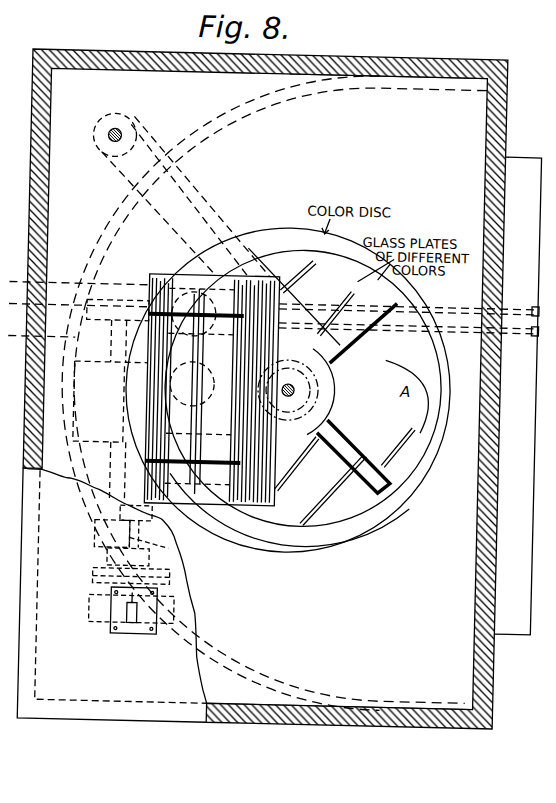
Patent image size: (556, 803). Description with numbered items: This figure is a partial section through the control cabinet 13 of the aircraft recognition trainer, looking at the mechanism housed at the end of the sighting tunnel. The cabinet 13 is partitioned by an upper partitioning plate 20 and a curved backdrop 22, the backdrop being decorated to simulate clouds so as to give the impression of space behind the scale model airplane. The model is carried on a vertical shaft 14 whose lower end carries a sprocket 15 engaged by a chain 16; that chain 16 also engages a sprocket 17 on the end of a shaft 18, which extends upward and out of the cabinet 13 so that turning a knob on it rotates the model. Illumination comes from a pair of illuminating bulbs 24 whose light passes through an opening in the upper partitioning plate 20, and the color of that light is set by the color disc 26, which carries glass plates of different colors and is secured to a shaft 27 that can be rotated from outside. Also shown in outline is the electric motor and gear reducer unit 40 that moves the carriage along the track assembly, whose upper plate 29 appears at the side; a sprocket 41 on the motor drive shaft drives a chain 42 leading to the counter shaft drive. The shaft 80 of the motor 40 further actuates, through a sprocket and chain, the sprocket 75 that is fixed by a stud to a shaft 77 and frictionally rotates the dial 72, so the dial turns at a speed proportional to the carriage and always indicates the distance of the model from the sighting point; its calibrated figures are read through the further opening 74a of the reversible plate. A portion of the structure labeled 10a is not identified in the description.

The housing casing 10a is at (491, 535).
The control cabinet 13 is at (164, 724).
The vertical shaft 14 is at (353, 392).
The sprocket 15 is at (321, 370).
The chain 16 is at (226, 208).
The sprocket 17 is at (146, 134).
The shaft 18 is at (118, 127).
The upper partitioning plate 20 is at (369, 100).
The backdrop 22 is at (107, 212).
The illuminating bulbs 24 is at (211, 390).
The color disc 26 is at (384, 507).
The shaft 27 is at (297, 392).
The upper plate 29 is at (529, 150).
The electric motor and gear reducer unit 40 is at (74, 400).
The sprocket 41 is at (269, 317).
The chain 42 is at (543, 292).
The dial 72 is at (102, 612).
The further opening 74a is at (140, 632).
The sprocket 75 is at (105, 578).
The shaft 77 is at (182, 546).
The shaft of the motor 80 is at (106, 505).